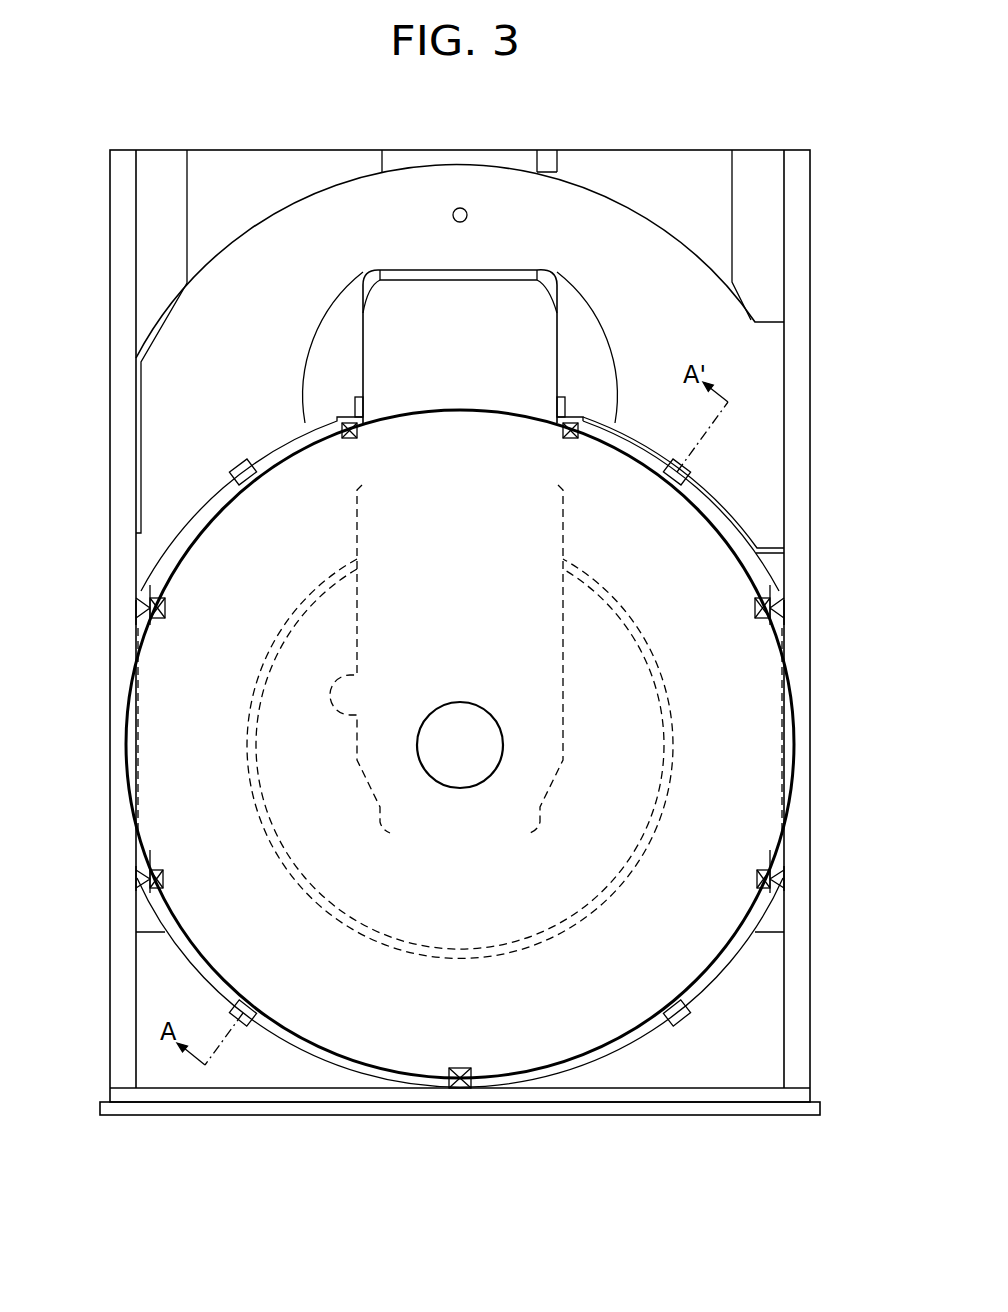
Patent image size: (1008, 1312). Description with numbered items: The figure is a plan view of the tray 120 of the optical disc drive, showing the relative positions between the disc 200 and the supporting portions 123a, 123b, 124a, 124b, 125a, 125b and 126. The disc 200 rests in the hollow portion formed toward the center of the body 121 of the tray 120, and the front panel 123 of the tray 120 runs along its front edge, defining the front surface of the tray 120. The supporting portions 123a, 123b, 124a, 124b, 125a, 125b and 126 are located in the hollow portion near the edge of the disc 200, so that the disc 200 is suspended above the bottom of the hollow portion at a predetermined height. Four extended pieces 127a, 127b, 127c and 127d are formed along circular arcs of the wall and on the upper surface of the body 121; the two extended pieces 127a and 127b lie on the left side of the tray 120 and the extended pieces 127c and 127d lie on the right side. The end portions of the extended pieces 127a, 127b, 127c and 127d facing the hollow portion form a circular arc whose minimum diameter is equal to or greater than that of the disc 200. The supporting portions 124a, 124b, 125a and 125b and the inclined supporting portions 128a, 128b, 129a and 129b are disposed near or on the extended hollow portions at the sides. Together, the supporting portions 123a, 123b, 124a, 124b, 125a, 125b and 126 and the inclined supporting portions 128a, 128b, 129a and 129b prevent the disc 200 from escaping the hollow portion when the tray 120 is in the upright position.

The tray 120 is at (176, 1148).
The body 121 is at (767, 421).
The front panel 123 is at (625, 1115).
The supporting portion 123a is at (356, 438).
The supporting portion 123b is at (564, 438).
The supporting portion 124a is at (165, 879).
The supporting portion 124b is at (165, 614).
The supporting portion 125a is at (758, 872).
The supporting portion 125b is at (755, 606).
The supporting portion 126 is at (460, 1068).
The extended piece 127a is at (240, 463).
The extended piece 127b is at (246, 1025).
The extended piece 127c is at (680, 1025).
The extended piece 127d is at (679, 463).
The inclined supporting portion 128a is at (128, 878).
The inclined supporting portion 128b is at (128, 612).
The inclined supporting portion 129a is at (792, 878).
The inclined supporting portion 129b is at (792, 612).
The disc 200 is at (790, 740).